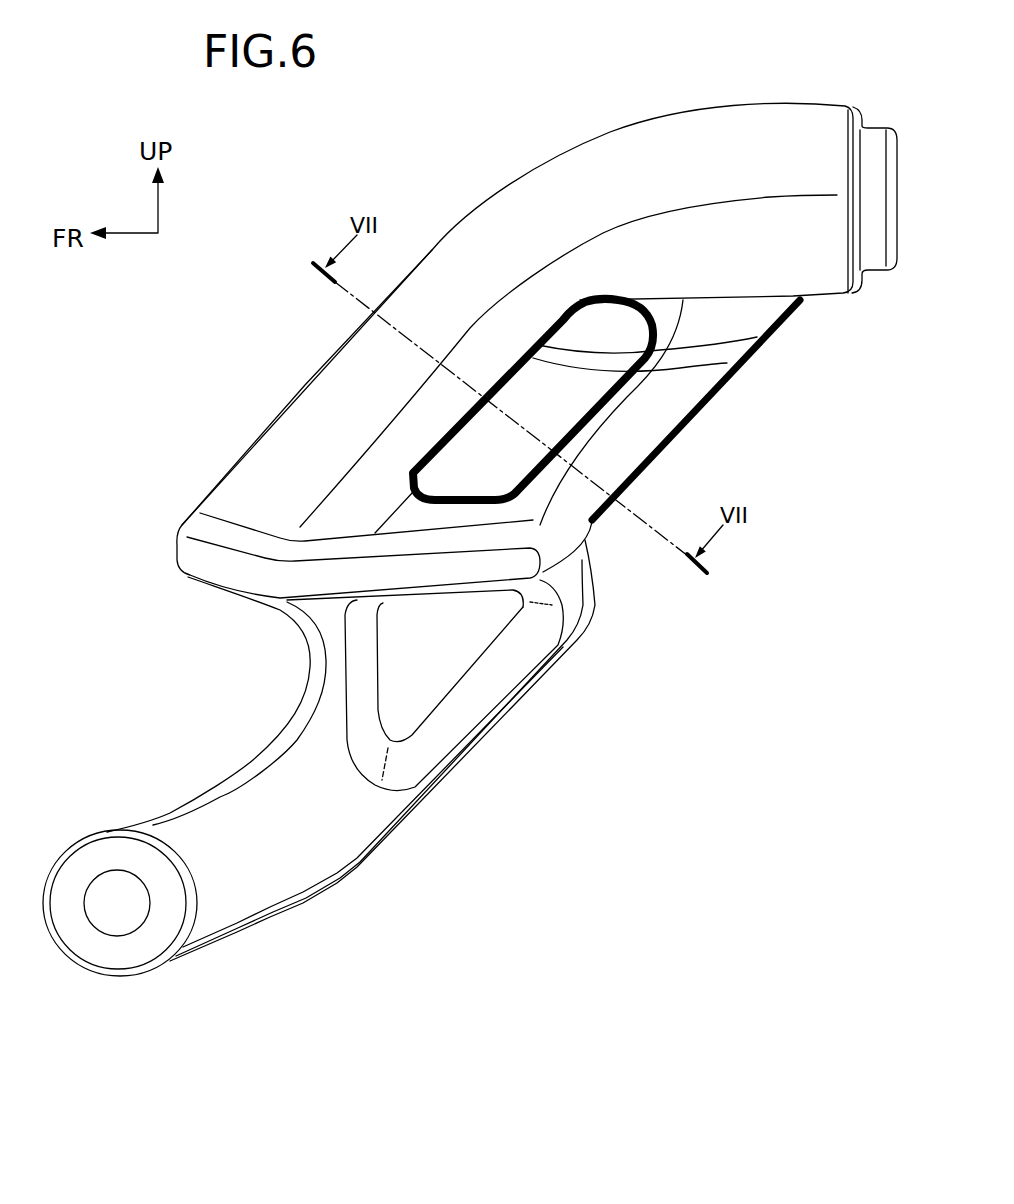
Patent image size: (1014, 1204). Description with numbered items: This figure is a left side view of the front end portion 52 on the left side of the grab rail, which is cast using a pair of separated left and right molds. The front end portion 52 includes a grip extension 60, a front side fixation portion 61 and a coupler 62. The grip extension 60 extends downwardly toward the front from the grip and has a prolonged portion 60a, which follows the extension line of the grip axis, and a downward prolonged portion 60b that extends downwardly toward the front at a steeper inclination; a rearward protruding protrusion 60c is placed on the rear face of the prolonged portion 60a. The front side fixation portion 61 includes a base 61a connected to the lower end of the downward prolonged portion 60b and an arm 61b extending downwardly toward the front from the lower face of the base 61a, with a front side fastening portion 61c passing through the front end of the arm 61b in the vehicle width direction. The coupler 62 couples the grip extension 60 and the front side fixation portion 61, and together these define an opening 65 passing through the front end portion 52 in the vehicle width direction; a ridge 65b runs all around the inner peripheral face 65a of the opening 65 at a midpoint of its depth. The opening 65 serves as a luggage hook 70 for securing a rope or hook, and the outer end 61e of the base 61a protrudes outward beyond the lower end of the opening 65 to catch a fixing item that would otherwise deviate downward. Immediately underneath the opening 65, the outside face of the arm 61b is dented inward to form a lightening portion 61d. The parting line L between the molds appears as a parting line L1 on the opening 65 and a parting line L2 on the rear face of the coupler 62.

The front end portion 52 is at (436, 89).
The grip extension 60 is at (535, 158).
The prolonged portion 60a is at (767, 143).
The downward prolonged portion 60b is at (357, 360).
The rearward protruding protrusion 60c is at (897, 150).
The front side fixation portion 61 is at (292, 698).
The base 61a is at (468, 562).
The arm 61b is at (303, 867).
The front side fastening portion 61c is at (120, 920).
The lightening portion 61d is at (440, 665).
The outer end 61e is at (490, 567).
The coupler 62 is at (650, 420).
The opening 65 is at (440, 440).
The inner peripheral face 65a is at (528, 397).
The ridge 65b is at (757, 337).
The luggage hook 70 is at (538, 342).
The parting line L is at (669, 456).
The parting line L1 is at (727, 363).
The parting line L2 is at (717, 390).